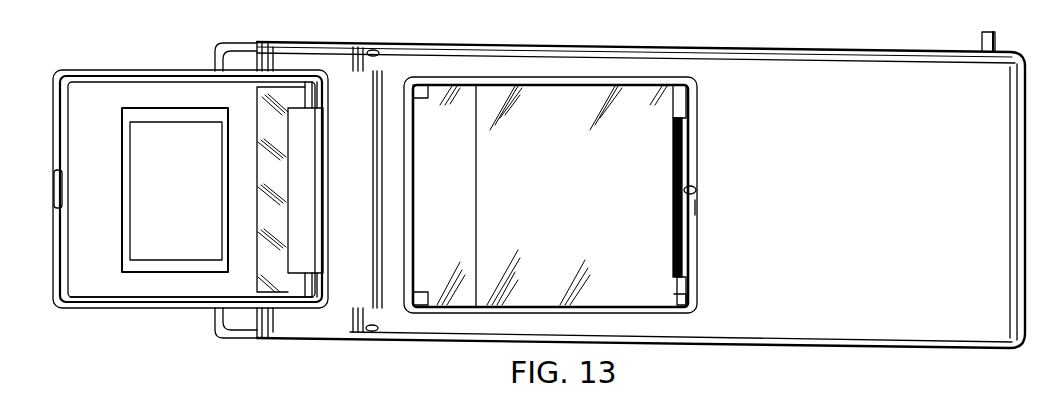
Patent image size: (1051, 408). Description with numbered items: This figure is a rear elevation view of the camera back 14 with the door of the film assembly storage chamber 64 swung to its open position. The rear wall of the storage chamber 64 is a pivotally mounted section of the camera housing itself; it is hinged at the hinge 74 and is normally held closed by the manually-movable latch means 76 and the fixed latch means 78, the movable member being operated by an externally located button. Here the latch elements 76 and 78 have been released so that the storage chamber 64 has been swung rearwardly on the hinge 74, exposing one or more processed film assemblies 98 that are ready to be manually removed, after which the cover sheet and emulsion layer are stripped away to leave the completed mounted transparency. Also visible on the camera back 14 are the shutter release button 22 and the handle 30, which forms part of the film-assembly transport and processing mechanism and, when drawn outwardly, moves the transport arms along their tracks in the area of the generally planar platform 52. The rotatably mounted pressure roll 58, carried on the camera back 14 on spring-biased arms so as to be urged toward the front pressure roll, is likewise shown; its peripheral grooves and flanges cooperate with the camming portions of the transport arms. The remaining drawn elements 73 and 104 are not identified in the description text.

The camera back 14 is at (872, 208).
The shutter release button 22 is at (994, 34).
The handle 30 is at (223, 47).
The platform 52 is at (571, 204).
The pressure roll 58 is at (684, 131).
The storage chamber 64 is at (158, 306).
The housing bottom edge 73 is at (124, 320).
The hinge 74 is at (373, 127).
The manually-movable latch means 76 is at (57, 187).
The fixed latch means 78 is at (697, 190).
The processed film assembly 98 is at (106, 186).
The inner frame 104 is at (186, 209).